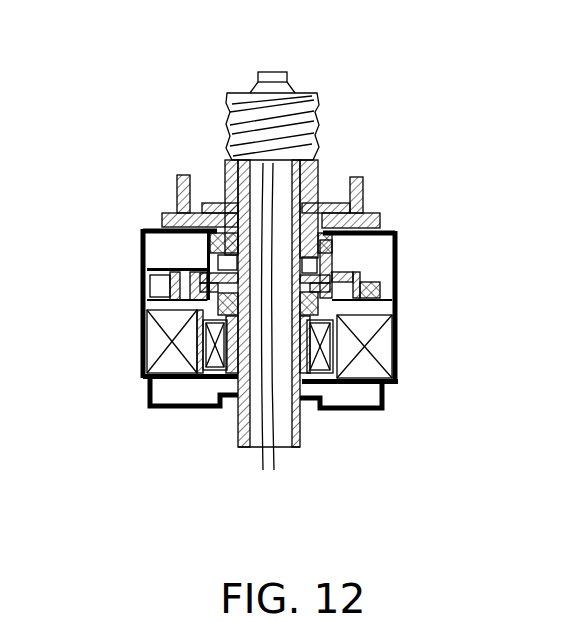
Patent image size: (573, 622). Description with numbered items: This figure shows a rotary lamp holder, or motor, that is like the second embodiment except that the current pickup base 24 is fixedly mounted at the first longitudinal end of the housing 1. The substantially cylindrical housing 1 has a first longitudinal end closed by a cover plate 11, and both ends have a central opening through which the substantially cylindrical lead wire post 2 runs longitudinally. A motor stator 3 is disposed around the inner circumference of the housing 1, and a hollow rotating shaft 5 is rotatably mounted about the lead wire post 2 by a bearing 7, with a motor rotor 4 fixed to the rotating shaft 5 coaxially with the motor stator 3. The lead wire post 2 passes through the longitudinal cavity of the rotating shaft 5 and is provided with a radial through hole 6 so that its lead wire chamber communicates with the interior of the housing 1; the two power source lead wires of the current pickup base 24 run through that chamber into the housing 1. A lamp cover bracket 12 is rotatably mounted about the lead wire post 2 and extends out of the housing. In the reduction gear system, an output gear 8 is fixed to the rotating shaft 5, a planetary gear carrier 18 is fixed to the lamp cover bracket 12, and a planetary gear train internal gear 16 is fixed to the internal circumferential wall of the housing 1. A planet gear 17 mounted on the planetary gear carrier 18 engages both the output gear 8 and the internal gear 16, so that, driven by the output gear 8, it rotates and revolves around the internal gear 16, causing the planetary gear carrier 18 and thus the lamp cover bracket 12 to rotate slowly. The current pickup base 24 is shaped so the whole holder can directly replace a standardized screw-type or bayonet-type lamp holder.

The housing 1 is at (143, 230).
The lead wire post 2 is at (145, 267).
The motor stator 3 is at (157, 328).
The motor rotor 4 is at (196, 343).
The rotating shaft 5 is at (215, 365).
The radial through hole 6 is at (267, 407).
The bearing 7 is at (382, 405).
The output gear 8 is at (397, 362).
The cover plate 11 is at (390, 232).
The lamp cover bracket 12 is at (358, 177).
The planetary gear train internal gear 16 is at (395, 293).
The planet gear 17 is at (395, 268).
The planetary gear carrier 18 is at (177, 185).
The current pickup base 24 is at (263, 122).